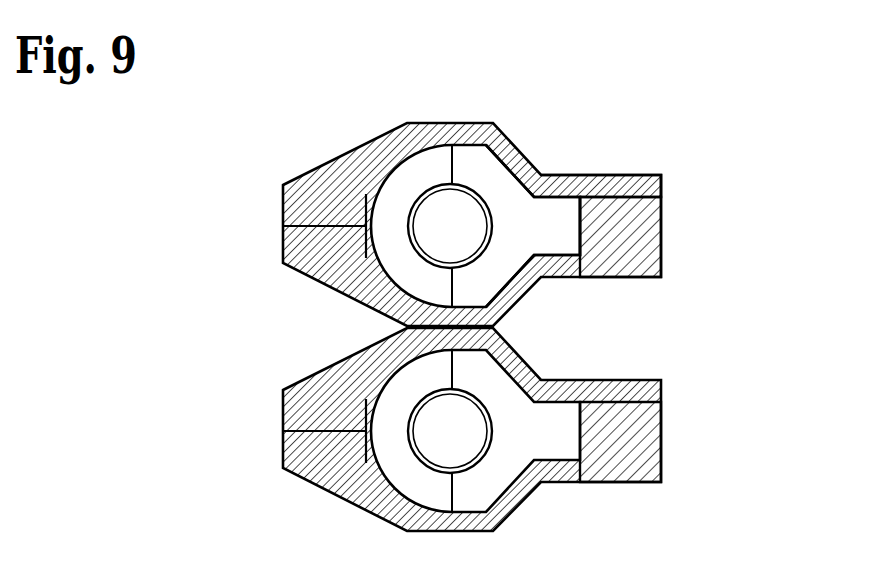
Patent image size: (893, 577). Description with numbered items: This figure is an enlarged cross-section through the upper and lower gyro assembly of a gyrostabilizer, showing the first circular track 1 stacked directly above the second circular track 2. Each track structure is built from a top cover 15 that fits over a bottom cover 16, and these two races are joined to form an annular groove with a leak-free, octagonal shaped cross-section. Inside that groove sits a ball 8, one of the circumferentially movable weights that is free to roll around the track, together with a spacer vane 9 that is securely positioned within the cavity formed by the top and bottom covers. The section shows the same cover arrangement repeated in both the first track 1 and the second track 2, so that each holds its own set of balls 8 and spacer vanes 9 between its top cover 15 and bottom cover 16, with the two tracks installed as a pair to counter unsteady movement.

The first circular track 1 is at (440, 204).
The second circular track 2 is at (236, 336).
The ball 8 is at (398, 200).
The spacer vane 9 is at (487, 173).
The top cover 15 is at (640, 176).
The bottom cover 16 is at (661, 240).